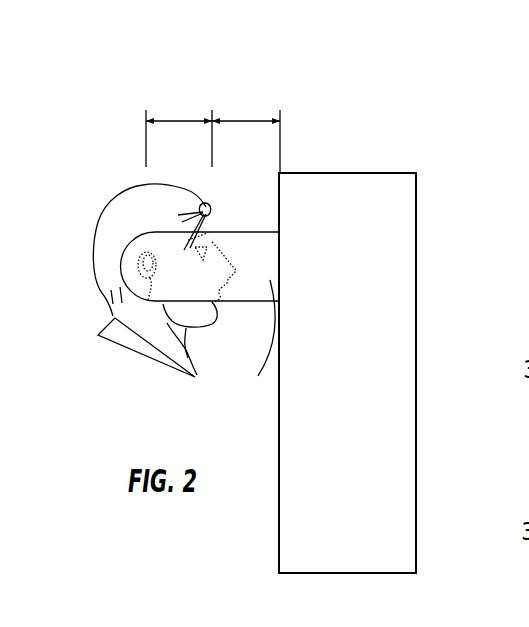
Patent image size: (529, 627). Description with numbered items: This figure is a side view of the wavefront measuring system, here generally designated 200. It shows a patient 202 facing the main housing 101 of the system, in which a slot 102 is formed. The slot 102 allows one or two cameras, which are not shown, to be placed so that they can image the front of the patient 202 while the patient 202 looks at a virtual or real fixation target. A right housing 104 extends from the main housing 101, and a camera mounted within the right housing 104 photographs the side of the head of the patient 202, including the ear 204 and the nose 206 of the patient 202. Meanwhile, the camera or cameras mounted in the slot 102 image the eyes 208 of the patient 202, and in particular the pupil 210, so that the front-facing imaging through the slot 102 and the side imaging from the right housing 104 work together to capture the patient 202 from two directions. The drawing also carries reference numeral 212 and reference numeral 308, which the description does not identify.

The wavefront measuring system 200 is at (434, 88).
The main housing 101 is at (400, 197).
The slot 102 is at (281, 265).
The right housing 104 is at (258, 376).
The patient 202 is at (100, 321).
The ear 204 is at (123, 277).
The nose 206 is at (234, 266).
The eyes 208 is at (209, 206).
The pupil 210 is at (245, 118).
The head depth distance 212 is at (178, 118).
The component (adjacent figure) 308 is at (528, 438).